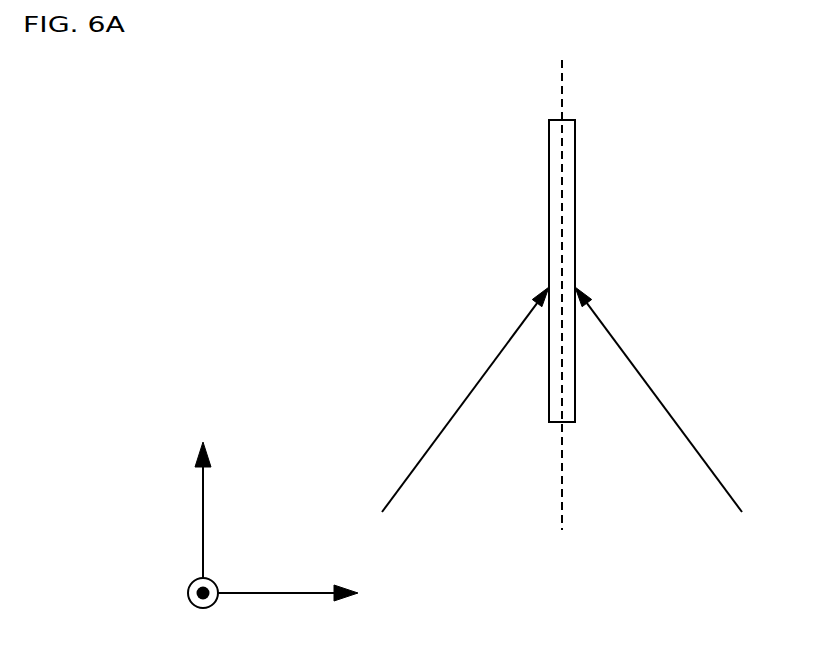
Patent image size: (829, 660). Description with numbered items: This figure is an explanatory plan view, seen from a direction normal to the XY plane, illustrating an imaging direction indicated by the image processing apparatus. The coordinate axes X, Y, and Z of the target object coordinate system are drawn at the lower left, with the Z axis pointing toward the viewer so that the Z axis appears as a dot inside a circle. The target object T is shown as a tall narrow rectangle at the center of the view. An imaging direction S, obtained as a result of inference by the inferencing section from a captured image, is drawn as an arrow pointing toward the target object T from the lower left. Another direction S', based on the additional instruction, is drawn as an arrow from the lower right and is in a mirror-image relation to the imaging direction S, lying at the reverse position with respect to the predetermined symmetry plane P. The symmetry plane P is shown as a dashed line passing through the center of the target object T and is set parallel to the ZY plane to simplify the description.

The target object T is at (575, 232).
The symmetry plane P is at (562, 311).
The imaging direction S is at (456, 413).
The other direction S' is at (669, 412).
The X axis X is at (289, 610).
The Y axis Y is at (194, 495).
The Z axis Z is at (192, 604).